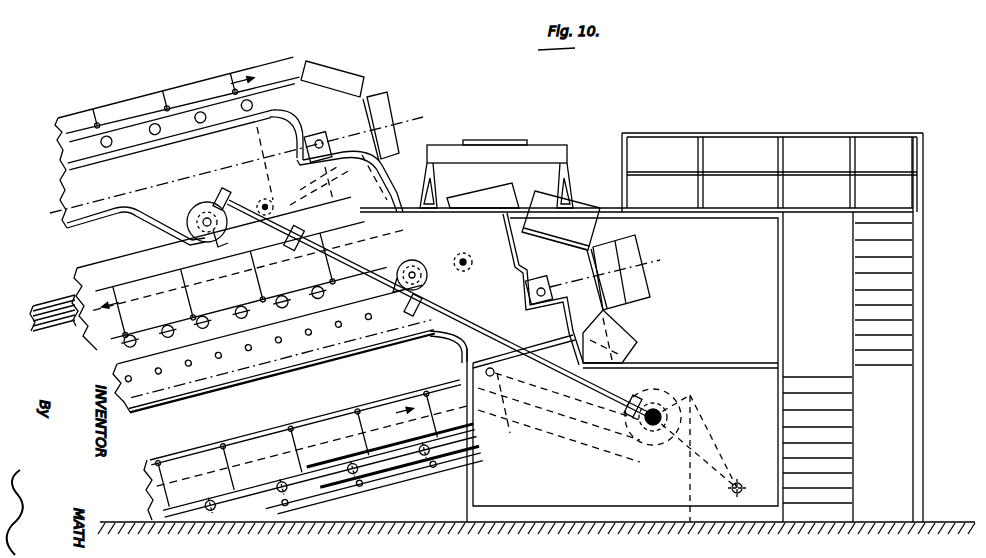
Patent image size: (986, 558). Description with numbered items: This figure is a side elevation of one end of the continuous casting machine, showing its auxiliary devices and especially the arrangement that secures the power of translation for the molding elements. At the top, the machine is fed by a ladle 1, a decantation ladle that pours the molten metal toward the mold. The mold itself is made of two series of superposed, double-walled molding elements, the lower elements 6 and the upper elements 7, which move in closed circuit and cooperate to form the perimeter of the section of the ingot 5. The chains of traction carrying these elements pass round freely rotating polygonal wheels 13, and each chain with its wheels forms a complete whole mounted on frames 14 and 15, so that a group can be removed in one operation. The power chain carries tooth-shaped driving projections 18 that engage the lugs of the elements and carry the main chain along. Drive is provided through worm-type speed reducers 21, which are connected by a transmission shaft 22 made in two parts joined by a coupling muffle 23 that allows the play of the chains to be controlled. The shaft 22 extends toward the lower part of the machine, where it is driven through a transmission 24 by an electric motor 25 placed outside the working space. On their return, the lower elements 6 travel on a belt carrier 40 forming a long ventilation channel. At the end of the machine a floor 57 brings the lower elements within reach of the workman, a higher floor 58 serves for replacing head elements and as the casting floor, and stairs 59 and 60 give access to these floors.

The ladle 1 is at (527, 145).
The ingot 5 is at (48, 322).
The lower molding elements 6 is at (102, 328).
The upper molding elements 7 is at (263, 70).
The polygonal wheels 13 is at (345, 110).
The frame 14 is at (135, 398).
The frame 15 is at (63, 190).
The driving projections 18 is at (270, 201).
The speed reducers 21 is at (196, 218).
The transmission shaft 22 is at (498, 324).
The coupling muffle 23 is at (295, 250).
The transmission 24 is at (686, 416).
The electric motor 25 is at (746, 477).
The belt carrier 40 is at (382, 475).
The floor 57 is at (703, 366).
The higher floor 58 is at (677, 217).
The stairs 59 is at (843, 435).
The stairs 60 is at (903, 300).